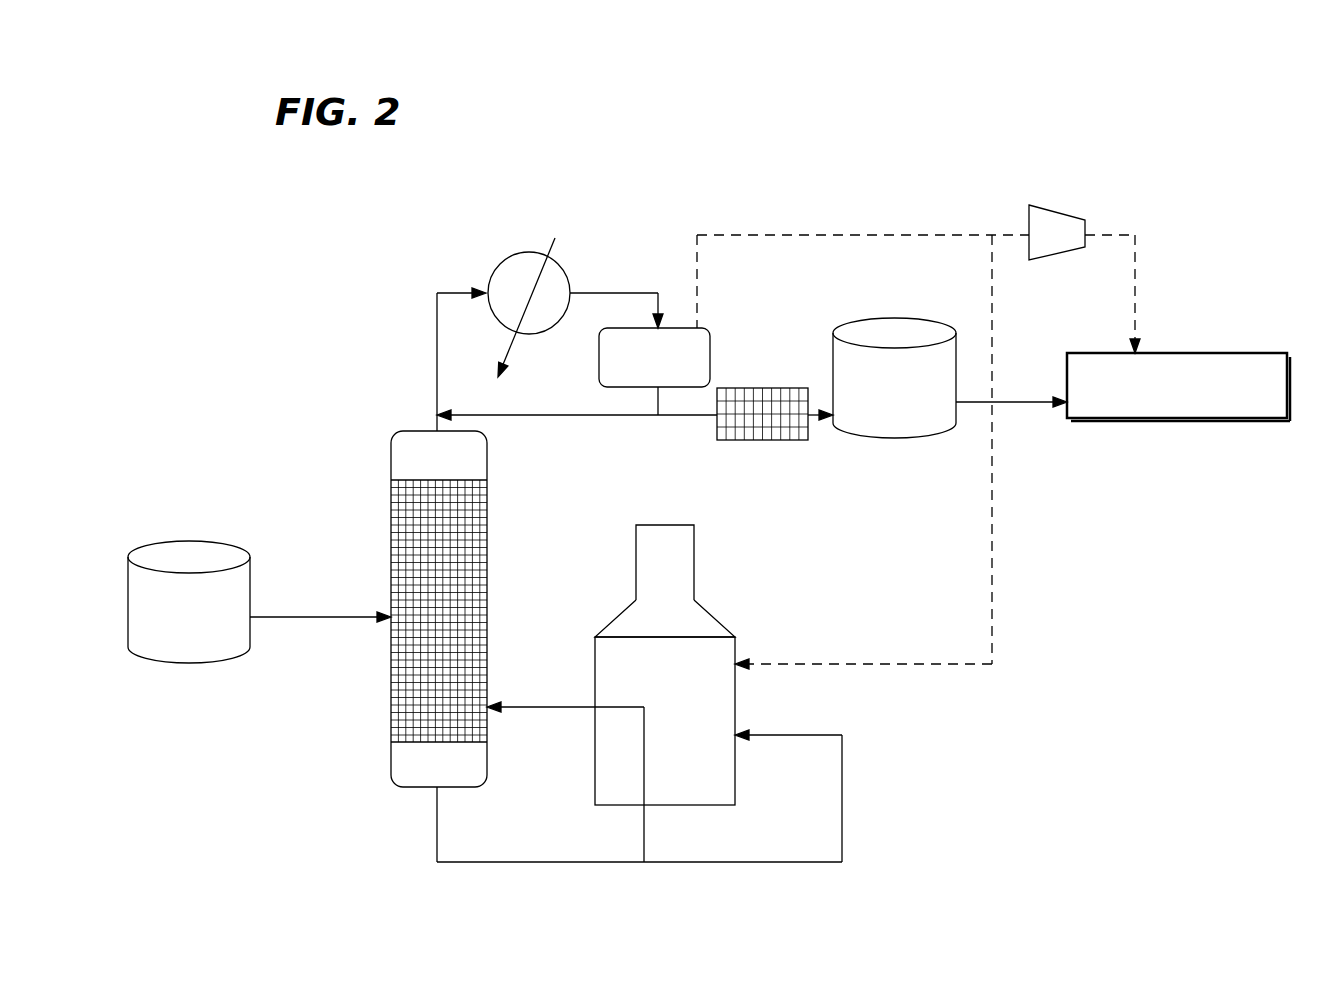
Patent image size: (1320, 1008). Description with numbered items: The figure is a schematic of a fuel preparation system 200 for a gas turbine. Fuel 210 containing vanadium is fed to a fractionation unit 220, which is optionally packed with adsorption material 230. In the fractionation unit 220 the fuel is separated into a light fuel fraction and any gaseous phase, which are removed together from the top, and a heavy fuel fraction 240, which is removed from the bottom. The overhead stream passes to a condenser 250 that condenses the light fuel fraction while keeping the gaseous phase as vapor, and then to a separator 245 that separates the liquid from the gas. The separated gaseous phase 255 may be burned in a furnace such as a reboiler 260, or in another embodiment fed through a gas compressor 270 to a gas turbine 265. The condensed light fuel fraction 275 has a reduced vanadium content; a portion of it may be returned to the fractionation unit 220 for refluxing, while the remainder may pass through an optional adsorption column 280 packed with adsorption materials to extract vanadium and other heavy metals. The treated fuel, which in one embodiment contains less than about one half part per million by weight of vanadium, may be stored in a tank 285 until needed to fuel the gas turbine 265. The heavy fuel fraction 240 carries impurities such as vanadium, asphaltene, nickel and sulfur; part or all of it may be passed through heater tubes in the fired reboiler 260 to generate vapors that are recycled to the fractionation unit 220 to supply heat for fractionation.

The fuel preparation system 200 is at (891, 172).
The fuel 210 is at (162, 626).
The fractionation unit 220 is at (416, 469).
The adsorption material 230 is at (391, 517).
The heavy fuel fraction 240 is at (437, 837).
The separator 245 is at (628, 369).
The condenser 250 is at (565, 256).
The separated gaseous phase 255 is at (685, 255).
The reboiler 260 is at (644, 684).
The gas turbine 265 is at (1150, 403).
The gas compressor 270 is at (1101, 211).
The condensed light fuel fraction 275 is at (528, 416).
The adsorption column 280 is at (808, 434).
The tank 285 is at (867, 393).